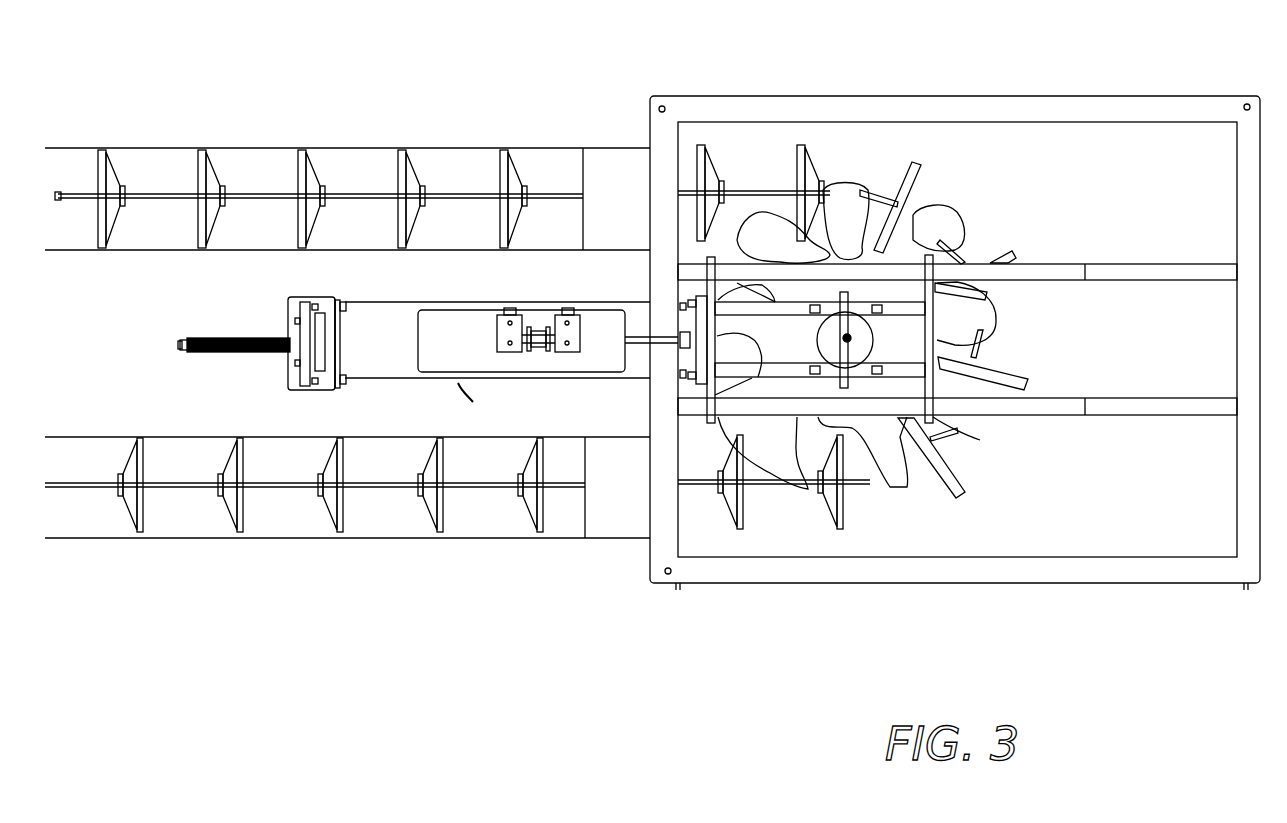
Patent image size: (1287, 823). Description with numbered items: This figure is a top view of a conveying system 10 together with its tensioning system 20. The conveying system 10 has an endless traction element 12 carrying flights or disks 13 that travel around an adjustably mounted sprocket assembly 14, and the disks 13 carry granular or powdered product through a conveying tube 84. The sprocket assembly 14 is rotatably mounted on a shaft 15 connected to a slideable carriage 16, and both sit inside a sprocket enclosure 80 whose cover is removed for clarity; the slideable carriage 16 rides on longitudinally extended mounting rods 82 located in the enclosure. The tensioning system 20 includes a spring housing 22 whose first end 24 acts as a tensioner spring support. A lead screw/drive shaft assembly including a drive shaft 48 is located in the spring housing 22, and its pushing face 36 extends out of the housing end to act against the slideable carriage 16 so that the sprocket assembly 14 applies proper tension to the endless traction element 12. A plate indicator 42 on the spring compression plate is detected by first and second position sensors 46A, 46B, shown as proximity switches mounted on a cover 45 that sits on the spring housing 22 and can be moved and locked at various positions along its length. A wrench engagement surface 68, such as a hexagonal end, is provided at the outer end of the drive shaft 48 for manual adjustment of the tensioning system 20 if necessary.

The conveying system 10 is at (634, 640).
The endless traction element 12 is at (275, 488).
The disks 13 is at (437, 534).
The sprocket assembly 14 is at (806, 493).
The shaft 15 is at (857, 338).
The slideable carriage 16 is at (848, 336).
The tensioning system 20 is at (284, 326).
The spring housing 22 is at (388, 376).
The first end 24 is at (332, 340).
The pushing face 36 is at (695, 343).
The plate indicator 42 is at (547, 334).
The cover 45 is at (432, 326).
The first position sensor 46A is at (497, 325).
The second position sensor 46B is at (580, 322).
The drive shaft 48 is at (236, 356).
The wrench engagement surface 68 is at (178, 350).
The sprocket enclosure 80 is at (710, 92).
The mounting rods 82 is at (1135, 273).
The conveying tube 84 is at (100, 540).